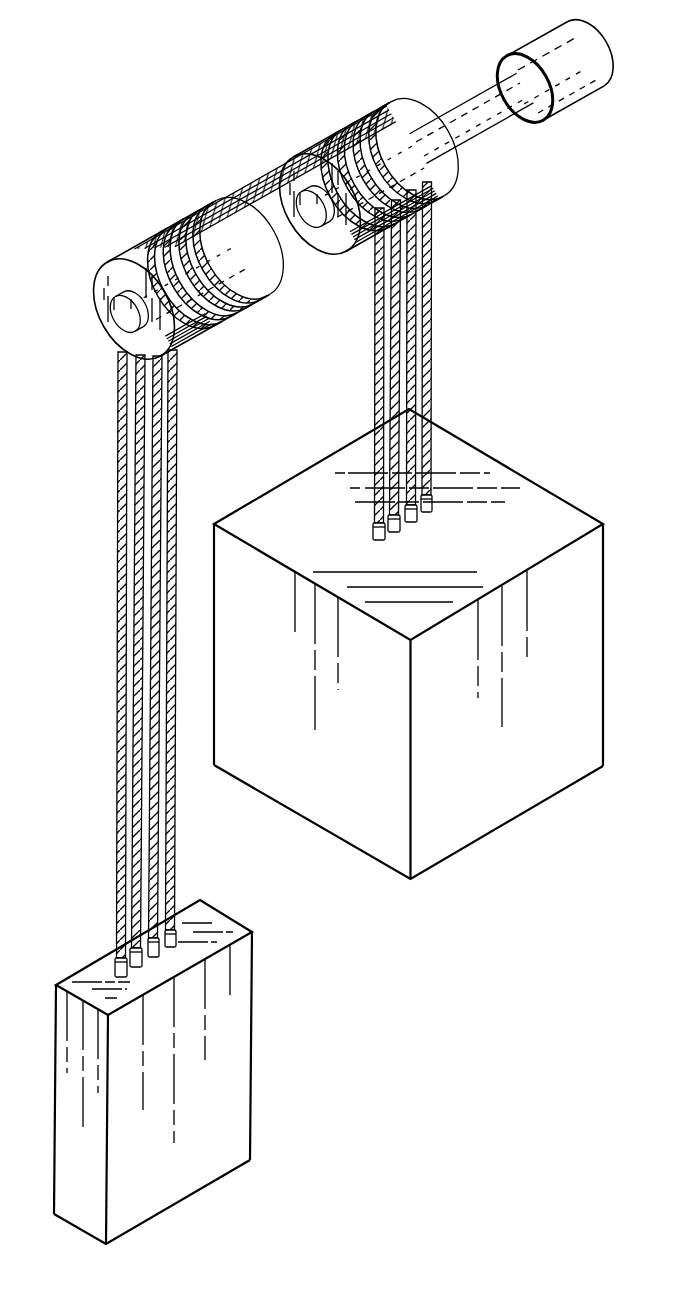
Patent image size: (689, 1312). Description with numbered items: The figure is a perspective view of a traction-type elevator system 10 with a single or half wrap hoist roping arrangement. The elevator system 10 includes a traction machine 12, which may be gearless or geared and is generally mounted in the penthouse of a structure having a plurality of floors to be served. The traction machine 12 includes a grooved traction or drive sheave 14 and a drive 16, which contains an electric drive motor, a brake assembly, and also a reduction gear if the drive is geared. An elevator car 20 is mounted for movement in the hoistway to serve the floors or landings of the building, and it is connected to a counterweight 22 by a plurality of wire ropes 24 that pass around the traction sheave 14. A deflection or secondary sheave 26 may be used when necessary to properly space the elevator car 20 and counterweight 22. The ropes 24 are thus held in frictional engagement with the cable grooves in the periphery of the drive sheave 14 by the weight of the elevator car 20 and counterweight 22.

The elevator system 10 is at (78, 654).
The traction machine 12 is at (441, 74).
The traction sheave 14 is at (316, 247).
The drive 16 is at (569, 47).
The elevator car 20 is at (466, 451).
The counterweight 22 is at (97, 974).
The wire ropes 24 is at (443, 303).
The deflection sheave 26 is at (259, 298).